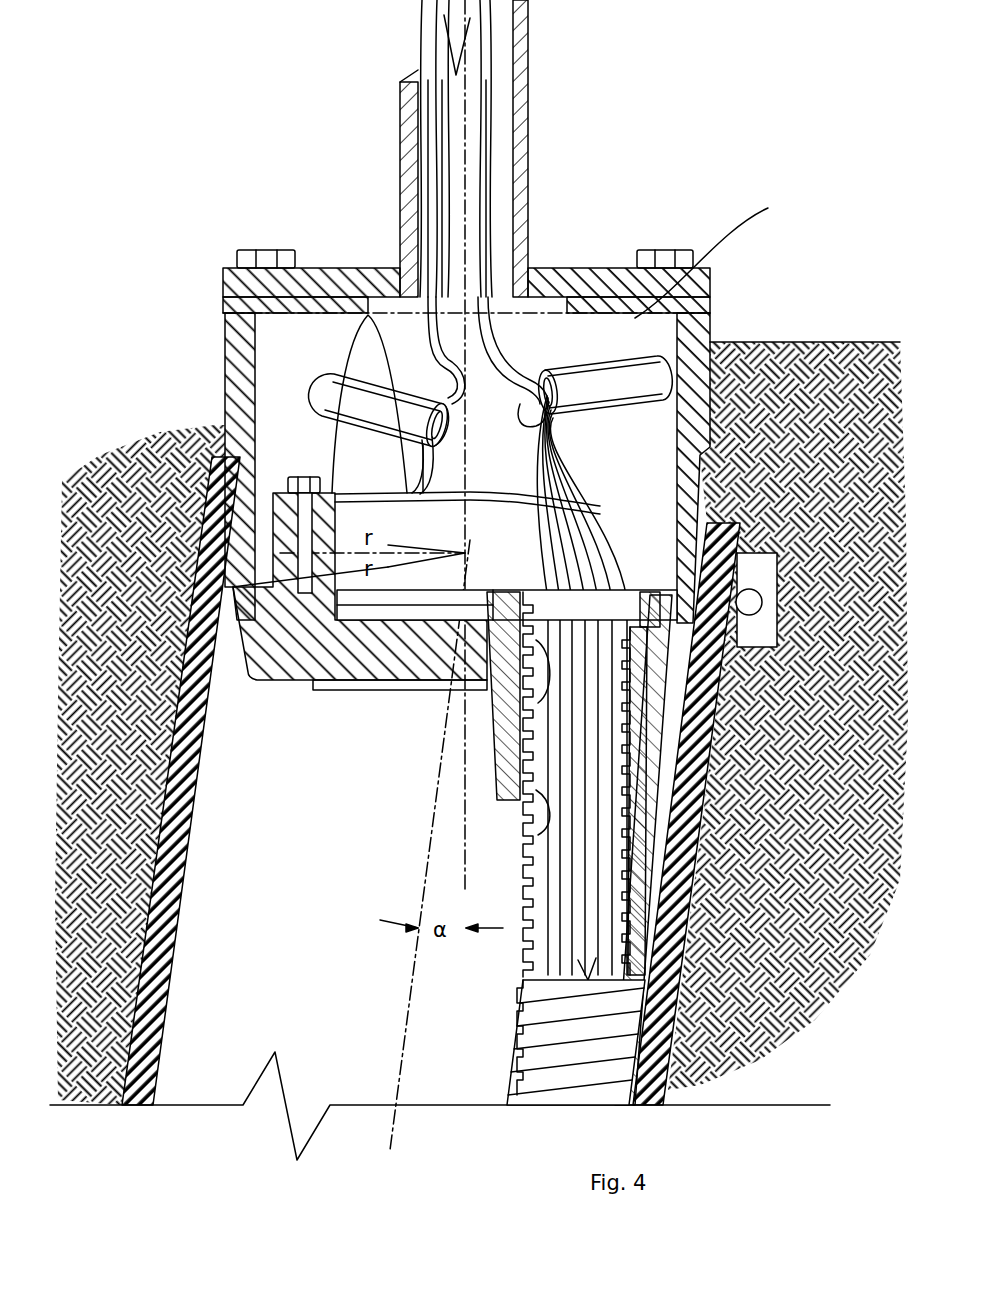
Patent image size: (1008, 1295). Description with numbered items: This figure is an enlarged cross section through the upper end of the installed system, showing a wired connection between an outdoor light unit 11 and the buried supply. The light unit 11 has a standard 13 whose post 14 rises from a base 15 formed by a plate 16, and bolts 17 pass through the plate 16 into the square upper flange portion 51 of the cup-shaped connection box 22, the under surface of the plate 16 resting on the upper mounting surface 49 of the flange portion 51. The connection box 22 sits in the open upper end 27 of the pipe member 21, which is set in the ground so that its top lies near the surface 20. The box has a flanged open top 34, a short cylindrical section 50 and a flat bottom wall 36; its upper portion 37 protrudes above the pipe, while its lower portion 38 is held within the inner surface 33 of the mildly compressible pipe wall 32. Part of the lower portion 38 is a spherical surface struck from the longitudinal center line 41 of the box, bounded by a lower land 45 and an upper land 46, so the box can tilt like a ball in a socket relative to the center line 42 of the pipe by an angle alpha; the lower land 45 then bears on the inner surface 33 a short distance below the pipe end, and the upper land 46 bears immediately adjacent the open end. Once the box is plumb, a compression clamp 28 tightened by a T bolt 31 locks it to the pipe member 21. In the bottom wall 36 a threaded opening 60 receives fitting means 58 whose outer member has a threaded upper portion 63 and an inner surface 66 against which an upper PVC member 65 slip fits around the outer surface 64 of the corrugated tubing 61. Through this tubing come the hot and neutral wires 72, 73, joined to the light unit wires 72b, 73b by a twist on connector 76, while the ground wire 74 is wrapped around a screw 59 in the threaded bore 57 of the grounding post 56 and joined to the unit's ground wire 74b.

The outdoor light unit 11 is at (368, 127).
The standard 13 is at (531, 57).
The post 14 is at (540, 118).
The base 15 is at (598, 242).
The plate 16 is at (370, 268).
The bolts 17 is at (258, 250).
The surface 20 is at (845, 338).
The pipe member 21 is at (685, 995).
The connection box 22 is at (737, 330).
The open upper end 27 is at (240, 626).
The compression clamp 28 is at (777, 568).
The T bolt 31 is at (762, 602).
The wall 32 is at (742, 652).
The inner surface 33 is at (205, 585).
The flanged open top 34 is at (700, 300).
The bottom wall 36 is at (200, 796).
The upper portion 37 is at (226, 340).
The lower portion 38 is at (698, 518).
The longitudinal center line 41 is at (182, 913).
The center line 42 is at (400, 987).
The lower land 45 is at (330, 688).
The upper land 46 is at (697, 478).
The upper mounting surface 49 is at (713, 302).
The cylindrical section 50 is at (228, 373).
The upper flange portion 51 is at (225, 300).
The grounding post 56 is at (340, 522).
The threaded bore 57 is at (215, 468).
The fitting means 58 is at (200, 905).
The screw 59 is at (302, 476).
The threaded opening 60 is at (493, 722).
The corrugated tubing 61 is at (697, 851).
The upper portion 63 is at (545, 792).
The outer surface 64 is at (523, 943).
The upper PVC member 65 is at (752, 630).
The inner surface 66 is at (487, 695).
The wire 72 is at (515, 1080).
The wire 72b is at (482, 178).
The wire 73 is at (592, 948).
The wire 73b is at (445, 180).
The ground wire 74 is at (593, 950).
The ground wire 74b is at (420, 80).
The twist on connector 76 is at (664, 304).